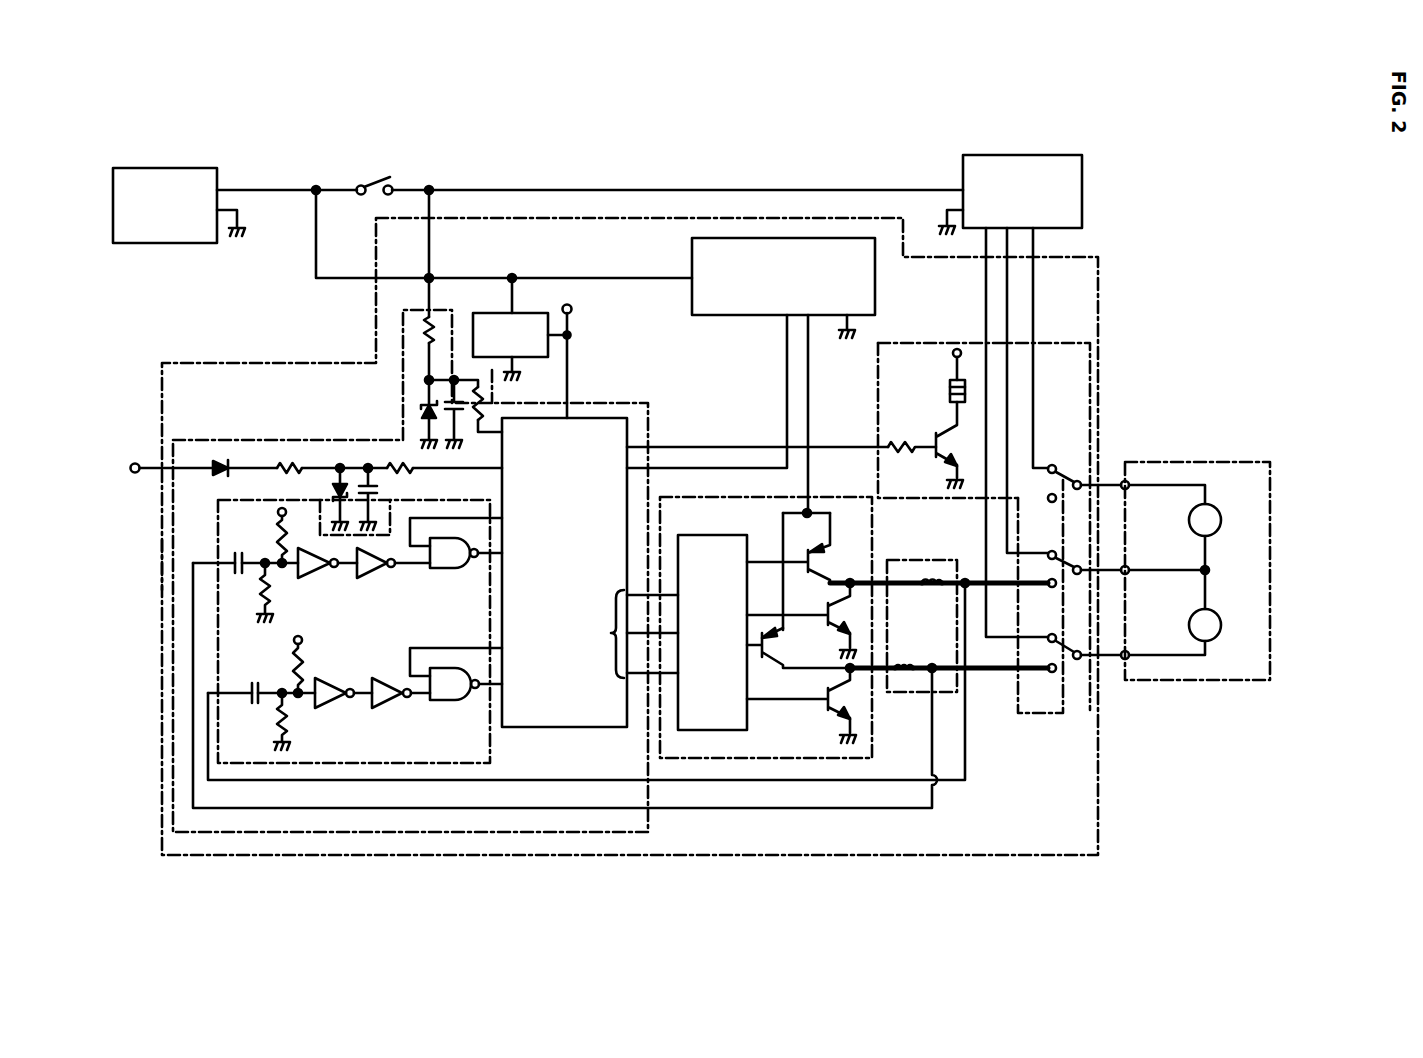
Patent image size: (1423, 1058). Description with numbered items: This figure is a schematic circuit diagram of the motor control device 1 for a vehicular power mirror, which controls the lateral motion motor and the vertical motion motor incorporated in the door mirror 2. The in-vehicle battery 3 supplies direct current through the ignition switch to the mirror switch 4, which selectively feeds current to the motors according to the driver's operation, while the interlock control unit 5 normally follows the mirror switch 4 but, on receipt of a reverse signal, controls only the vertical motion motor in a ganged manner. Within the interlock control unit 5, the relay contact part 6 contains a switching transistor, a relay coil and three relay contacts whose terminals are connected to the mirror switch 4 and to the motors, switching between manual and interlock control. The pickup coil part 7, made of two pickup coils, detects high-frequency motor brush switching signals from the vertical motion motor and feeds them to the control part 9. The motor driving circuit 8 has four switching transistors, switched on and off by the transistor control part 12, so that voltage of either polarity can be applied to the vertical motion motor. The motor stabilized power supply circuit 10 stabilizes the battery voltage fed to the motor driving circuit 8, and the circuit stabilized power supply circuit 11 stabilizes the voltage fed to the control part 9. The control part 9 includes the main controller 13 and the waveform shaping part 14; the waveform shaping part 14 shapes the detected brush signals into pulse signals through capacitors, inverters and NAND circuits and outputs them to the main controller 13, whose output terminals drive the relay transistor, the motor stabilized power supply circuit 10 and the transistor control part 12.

The motor control device 1 is at (783, 163).
The door mirror 2 is at (1223, 537).
The in-vehicle battery 3 is at (193, 168).
The mirror switch 4 is at (1005, 155).
The interlock control unit 5 is at (254, 363).
The relay contact part 6 is at (1050, 722).
The pickup coil part 7 is at (968, 690).
The motor driving circuit 8 is at (785, 855).
The control part 9 is at (170, 563).
The motor stabilized power supply circuit 10 is at (875, 291).
The circuit stabilized power supply circuit 11 is at (522, 348).
The transistor control part 12 is at (722, 535).
The main controller 13 is at (610, 412).
The waveform shaping part 14 is at (495, 748).